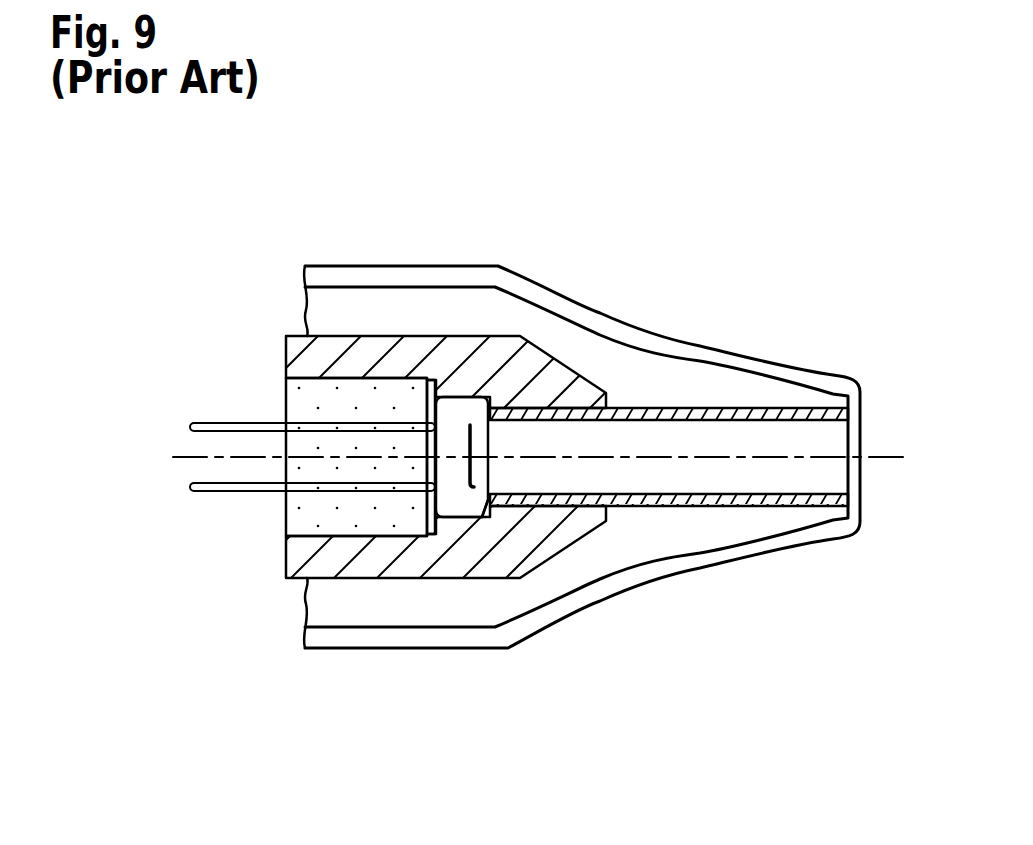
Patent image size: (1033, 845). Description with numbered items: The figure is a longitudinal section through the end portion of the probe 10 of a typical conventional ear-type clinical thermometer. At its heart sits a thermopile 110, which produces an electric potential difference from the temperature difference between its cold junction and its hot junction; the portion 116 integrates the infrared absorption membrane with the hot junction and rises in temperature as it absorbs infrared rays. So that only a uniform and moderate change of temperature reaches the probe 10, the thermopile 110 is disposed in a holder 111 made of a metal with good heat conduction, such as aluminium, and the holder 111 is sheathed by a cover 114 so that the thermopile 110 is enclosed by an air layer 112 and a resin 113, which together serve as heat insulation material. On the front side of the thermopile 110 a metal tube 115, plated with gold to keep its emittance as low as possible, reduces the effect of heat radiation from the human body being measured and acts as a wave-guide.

The probe 10 is at (589, 216).
The thermopile 110 is at (453, 500).
The holder 111 is at (452, 355).
The air layer 112 is at (667, 528).
The resin 113 is at (323, 512).
The cover 114 is at (631, 335).
The metal tube 115 is at (738, 413).
The portion integrated with the infrared absorption membrane and hot junction 116 is at (497, 505).